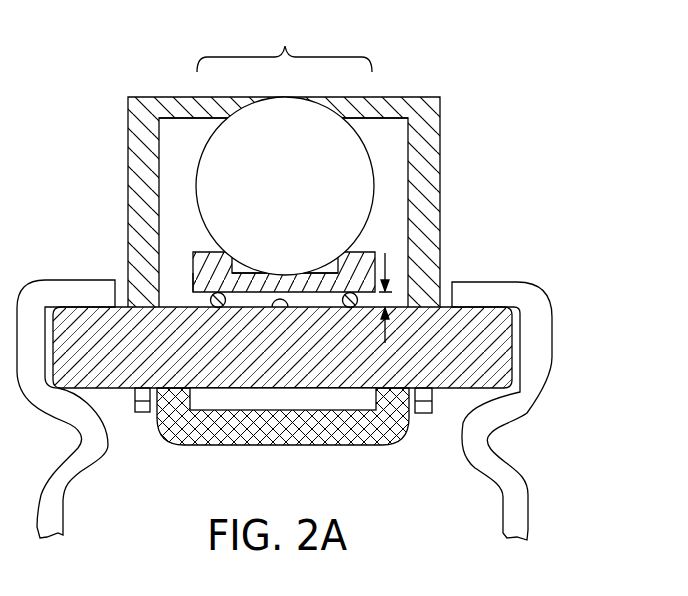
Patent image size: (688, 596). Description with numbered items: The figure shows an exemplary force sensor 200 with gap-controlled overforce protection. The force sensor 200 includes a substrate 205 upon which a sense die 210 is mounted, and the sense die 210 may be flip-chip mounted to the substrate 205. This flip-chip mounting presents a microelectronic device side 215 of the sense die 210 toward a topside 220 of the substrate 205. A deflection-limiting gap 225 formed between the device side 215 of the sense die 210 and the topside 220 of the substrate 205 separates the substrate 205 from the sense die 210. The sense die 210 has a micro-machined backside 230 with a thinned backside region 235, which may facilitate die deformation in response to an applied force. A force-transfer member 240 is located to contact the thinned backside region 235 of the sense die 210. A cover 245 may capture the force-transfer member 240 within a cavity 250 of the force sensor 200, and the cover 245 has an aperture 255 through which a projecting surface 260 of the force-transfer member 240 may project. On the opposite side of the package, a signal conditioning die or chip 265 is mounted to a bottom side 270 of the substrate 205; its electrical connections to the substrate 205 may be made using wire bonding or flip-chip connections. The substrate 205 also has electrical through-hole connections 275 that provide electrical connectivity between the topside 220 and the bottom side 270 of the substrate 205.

The force sensor 200 is at (560, 146).
The substrate 205 is at (496, 316).
The sense die 210 is at (178, 278).
The microelectronic device side 215 is at (243, 293).
The topside 220 is at (288, 310).
The deflection-limiting gap 225 is at (391, 298).
The micro-machined backside 230 is at (163, 276).
The thinned backside region 235 is at (262, 271).
The force-transfer member 240 is at (367, 182).
The cover 245 is at (318, 166).
The cavity 250 is at (387, 231).
The aperture 255 is at (196, 104).
The projecting surface 260 is at (284, 42).
The signal conditioning die or chip 265 is at (313, 402).
The bottom side 270 is at (443, 393).
The electrical through-hole connections 275 is at (537, 362).